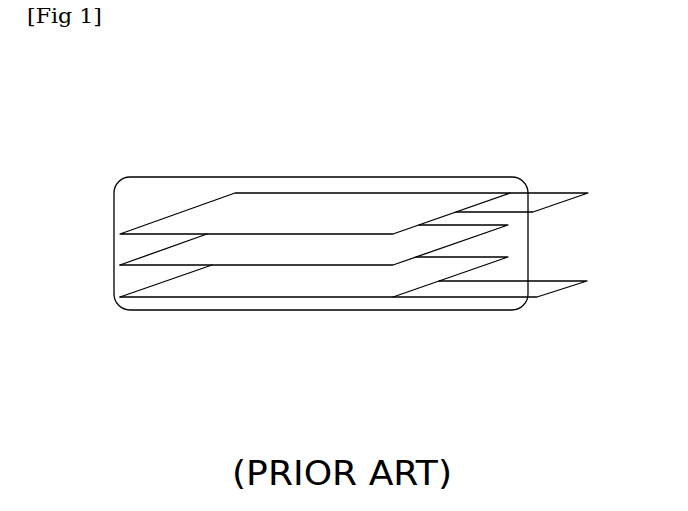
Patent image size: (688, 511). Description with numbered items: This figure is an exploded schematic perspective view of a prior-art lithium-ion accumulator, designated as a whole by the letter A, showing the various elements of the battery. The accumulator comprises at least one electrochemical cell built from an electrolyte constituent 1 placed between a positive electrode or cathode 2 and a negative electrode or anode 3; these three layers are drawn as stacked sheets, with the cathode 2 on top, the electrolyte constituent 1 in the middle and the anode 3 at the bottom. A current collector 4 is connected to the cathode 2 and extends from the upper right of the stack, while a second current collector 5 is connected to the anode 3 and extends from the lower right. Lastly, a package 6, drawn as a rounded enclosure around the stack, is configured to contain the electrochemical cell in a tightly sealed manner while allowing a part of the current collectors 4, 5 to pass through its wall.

The display device (prior art) A is at (400, 166).
The electrolyte constituent 1 is at (483, 235).
The positive electrode or cathode 2 is at (296, 212).
The negative electrode or anode 3 is at (238, 279).
The current collector 4 is at (537, 203).
The current collector 5 is at (545, 288).
The package 6 is at (332, 309).